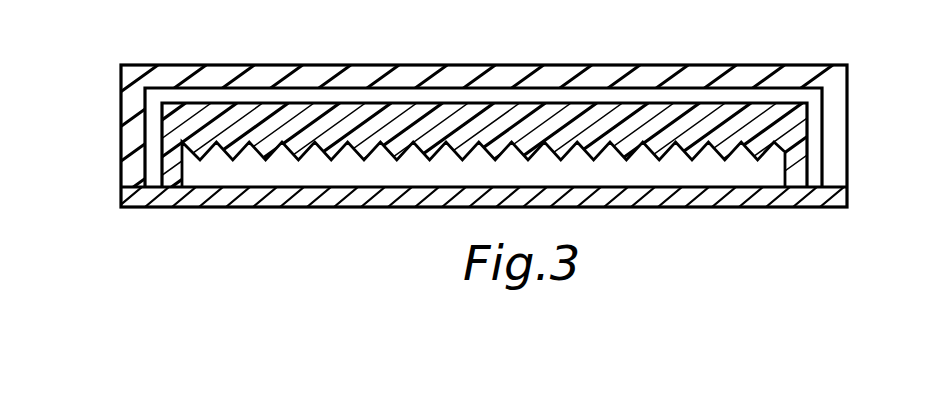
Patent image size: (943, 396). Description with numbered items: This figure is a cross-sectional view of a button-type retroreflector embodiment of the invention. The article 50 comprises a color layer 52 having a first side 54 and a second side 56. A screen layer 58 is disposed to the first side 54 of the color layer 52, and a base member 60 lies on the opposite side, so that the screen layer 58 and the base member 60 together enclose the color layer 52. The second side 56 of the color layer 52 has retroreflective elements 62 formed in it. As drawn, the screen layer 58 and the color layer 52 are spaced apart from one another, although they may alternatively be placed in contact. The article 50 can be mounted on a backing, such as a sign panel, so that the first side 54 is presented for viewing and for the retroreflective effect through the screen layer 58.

The article 50 is at (178, 232).
The color layer 52 is at (448, 188).
The first side 54 is at (690, 100).
The second side 56 is at (357, 143).
The screen layer 58 is at (778, 72).
The base member 60 is at (140, 191).
The retroreflective elements 62 is at (748, 143).